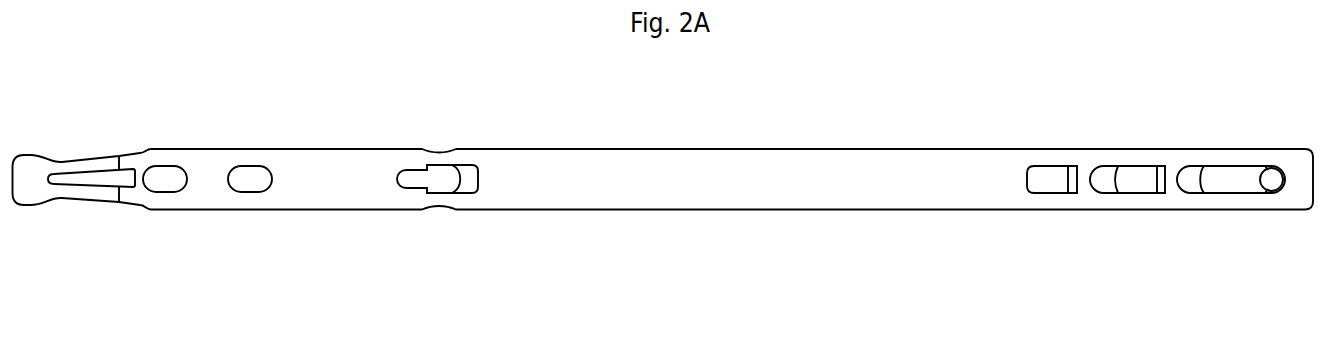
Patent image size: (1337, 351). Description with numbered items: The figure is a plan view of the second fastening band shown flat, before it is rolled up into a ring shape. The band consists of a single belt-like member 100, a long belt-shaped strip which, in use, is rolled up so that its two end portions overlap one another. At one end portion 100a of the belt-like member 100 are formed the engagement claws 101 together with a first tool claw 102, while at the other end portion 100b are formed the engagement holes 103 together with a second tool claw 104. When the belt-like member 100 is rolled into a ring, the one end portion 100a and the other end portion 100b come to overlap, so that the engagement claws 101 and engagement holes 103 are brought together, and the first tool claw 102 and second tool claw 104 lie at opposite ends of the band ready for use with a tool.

The belt-like member 100 is at (756, 190).
The one end portion 100a is at (197, 162).
The other end portion 100b is at (1290, 192).
The engagement claws 101 is at (257, 175).
The first tool claw 102 is at (420, 162).
The engagement holes 103 is at (1050, 173).
The second tool claw 104 is at (1277, 170).